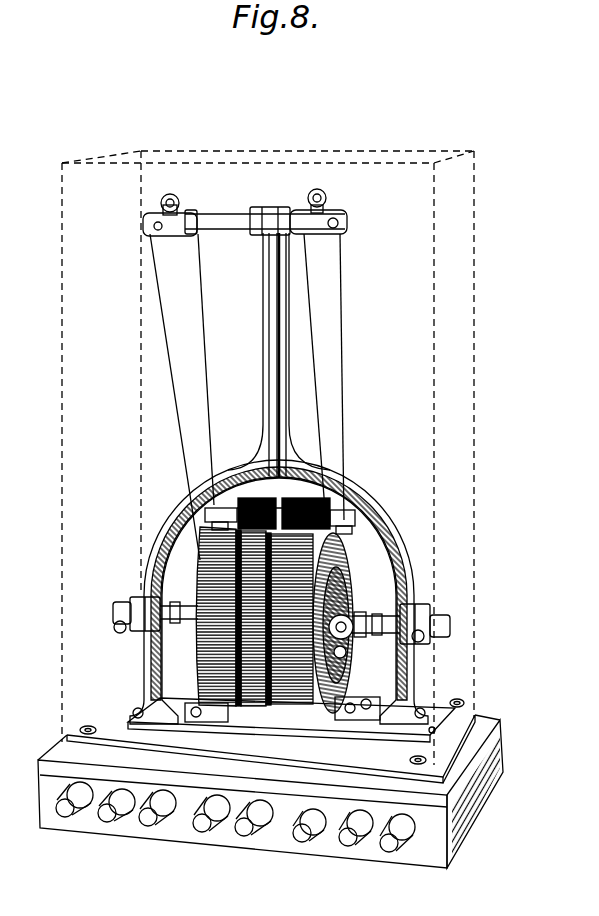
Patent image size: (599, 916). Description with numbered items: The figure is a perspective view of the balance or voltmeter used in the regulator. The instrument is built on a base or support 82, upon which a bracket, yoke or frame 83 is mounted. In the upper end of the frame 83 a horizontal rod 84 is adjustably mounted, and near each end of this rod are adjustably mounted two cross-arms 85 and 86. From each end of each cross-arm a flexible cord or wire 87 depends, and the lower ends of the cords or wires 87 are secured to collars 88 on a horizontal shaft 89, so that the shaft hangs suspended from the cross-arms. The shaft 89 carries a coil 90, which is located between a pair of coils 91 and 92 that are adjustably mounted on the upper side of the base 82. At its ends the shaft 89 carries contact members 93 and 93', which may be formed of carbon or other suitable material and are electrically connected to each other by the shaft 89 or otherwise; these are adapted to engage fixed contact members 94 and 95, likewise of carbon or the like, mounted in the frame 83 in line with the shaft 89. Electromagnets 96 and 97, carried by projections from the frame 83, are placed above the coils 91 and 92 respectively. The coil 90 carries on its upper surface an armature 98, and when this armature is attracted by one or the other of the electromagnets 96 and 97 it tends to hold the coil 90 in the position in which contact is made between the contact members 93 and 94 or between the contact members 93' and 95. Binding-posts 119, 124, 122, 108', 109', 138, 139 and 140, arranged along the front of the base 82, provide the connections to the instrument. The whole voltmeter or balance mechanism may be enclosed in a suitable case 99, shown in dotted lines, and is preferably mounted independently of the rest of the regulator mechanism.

The base 82 is at (497, 755).
The frame 83 is at (370, 495).
The horizontal rod 84 is at (338, 222).
The cross-arm 85 is at (173, 219).
The cross-arm 86 is at (326, 238).
The flexible cord 87 is at (203, 331).
The collar 88 is at (348, 614).
The horizontal shaft 89 is at (347, 652).
The coil 90 is at (262, 707).
The coil 91 is at (228, 707).
The coil 92 is at (303, 705).
The contact member 93 is at (180, 632).
The contact member 93' is at (376, 615).
The contact member 94 is at (113, 612).
The contact member 95 is at (452, 627).
The electromagnet 96 is at (257, 499).
The electromagnet 97 is at (305, 505).
The armature 98 is at (304, 499).
The case 99 is at (476, 330).
The binding-post 119 is at (74, 818).
The binding-post 124 is at (118, 823).
The binding-post 122 is at (162, 823).
The binding-post 108' is at (217, 836).
The binding-post 109' is at (263, 841).
The binding-post 138 is at (312, 841).
The binding-post 139 is at (353, 845).
The binding-post 140 is at (400, 849).